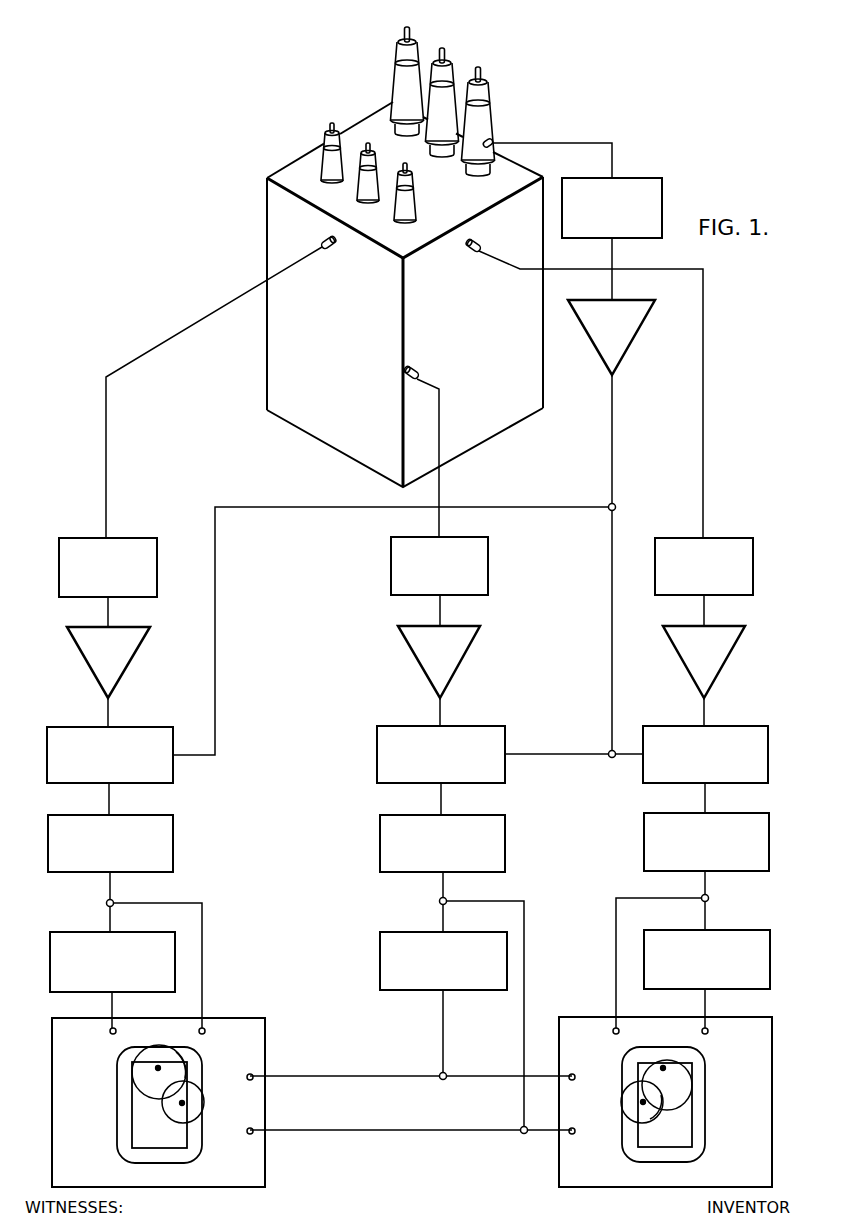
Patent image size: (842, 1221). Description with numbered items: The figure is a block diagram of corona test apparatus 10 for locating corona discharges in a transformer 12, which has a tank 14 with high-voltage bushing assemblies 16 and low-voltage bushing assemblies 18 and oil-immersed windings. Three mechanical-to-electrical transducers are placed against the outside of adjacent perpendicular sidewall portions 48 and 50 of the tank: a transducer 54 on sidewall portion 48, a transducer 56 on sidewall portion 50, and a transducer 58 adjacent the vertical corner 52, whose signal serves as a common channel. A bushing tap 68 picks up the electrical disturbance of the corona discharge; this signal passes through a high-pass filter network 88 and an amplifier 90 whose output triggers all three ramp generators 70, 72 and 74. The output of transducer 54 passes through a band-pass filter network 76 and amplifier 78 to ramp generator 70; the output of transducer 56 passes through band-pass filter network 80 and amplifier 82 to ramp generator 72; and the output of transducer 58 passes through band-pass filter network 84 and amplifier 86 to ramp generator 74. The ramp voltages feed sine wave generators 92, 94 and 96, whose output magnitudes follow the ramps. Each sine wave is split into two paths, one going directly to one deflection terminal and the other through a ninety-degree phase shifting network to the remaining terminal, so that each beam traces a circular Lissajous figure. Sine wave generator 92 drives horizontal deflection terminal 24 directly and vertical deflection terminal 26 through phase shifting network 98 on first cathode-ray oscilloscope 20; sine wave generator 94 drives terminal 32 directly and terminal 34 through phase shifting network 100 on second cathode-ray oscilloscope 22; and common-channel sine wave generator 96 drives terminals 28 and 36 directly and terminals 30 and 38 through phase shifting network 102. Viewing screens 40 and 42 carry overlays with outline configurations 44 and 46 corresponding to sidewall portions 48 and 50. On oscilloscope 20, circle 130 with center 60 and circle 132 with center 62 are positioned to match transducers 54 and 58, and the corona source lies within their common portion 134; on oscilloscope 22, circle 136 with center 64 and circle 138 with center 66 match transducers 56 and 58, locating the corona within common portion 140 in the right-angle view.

The corona test apparatus 10 is at (429, 1160).
The transformer 12 is at (360, 100).
The tank 14 is at (267, 204).
The high-voltage bushing assembly 16 is at (420, 46).
The low-voltage bushing assembly 18 is at (398, 214).
The first cathode-ray oscilloscope 20 is at (300, 1018).
The second cathode-ray oscilloscope 22 is at (567, 1017).
The horizontal deflection terminal 24 is at (199, 1031).
The vertical deflection terminal 26 is at (116, 1034).
The horizontal deflection terminal 28 is at (249, 1128).
The vertical deflection terminal 30 is at (248, 1079).
The horizontal deflection terminal 32 is at (618, 1034).
The vertical deflection terminal 34 is at (702, 1031).
The horizontal deflection terminal 36 is at (577, 1128).
The vertical deflection terminal 38 is at (574, 1080).
The viewing screen 40 is at (117, 1138).
The viewing screen 42 is at (700, 1146).
The outline configuration 44 is at (137, 1150).
The outline configuration 46 is at (640, 1148).
The vertical sidewall portion 48 is at (278, 232).
The vertical sidewall portion 50 is at (537, 192).
The vertical corner 52 is at (406, 300).
The transducer 54 is at (324, 240).
The transducer 56 is at (481, 242).
The transducer 58 is at (415, 366).
The center 60 is at (158, 1072).
The center 62 is at (180, 1105).
The center 64 is at (665, 1069).
The center 66 is at (640, 1103).
The bushing tap 68 is at (492, 138).
The ramp generator 70 is at (173, 733).
The ramp generator 72 is at (768, 733).
The ramp generator 74 is at (505, 733).
The band-pass filter network 76 is at (157, 555).
The amplifier 78 is at (147, 640).
The band-pass filter network 80 is at (753, 555).
The amplifier 82 is at (742, 640).
The band-pass filter network 84 is at (489, 555).
The amplifier 86 is at (477, 640).
The band-pass filter network 88 is at (644, 178).
The amplifier 90 is at (648, 317).
The sine wave generator 92 is at (173, 830).
The sine wave generator 94 is at (769, 830).
The sine wave generator 96 is at (505, 830).
The 90° phase shifting network 98 is at (152, 932).
The 90° phase shifting network 100 is at (750, 930).
The 90° phase shifting network 102 is at (395, 932).
The circle 130 is at (120, 1053).
The circle 132 is at (197, 1120).
The common portion 134 is at (181, 1067).
The circle 136 is at (697, 1081).
The circle 138 is at (648, 1128).
The common portion 140 is at (662, 1104).